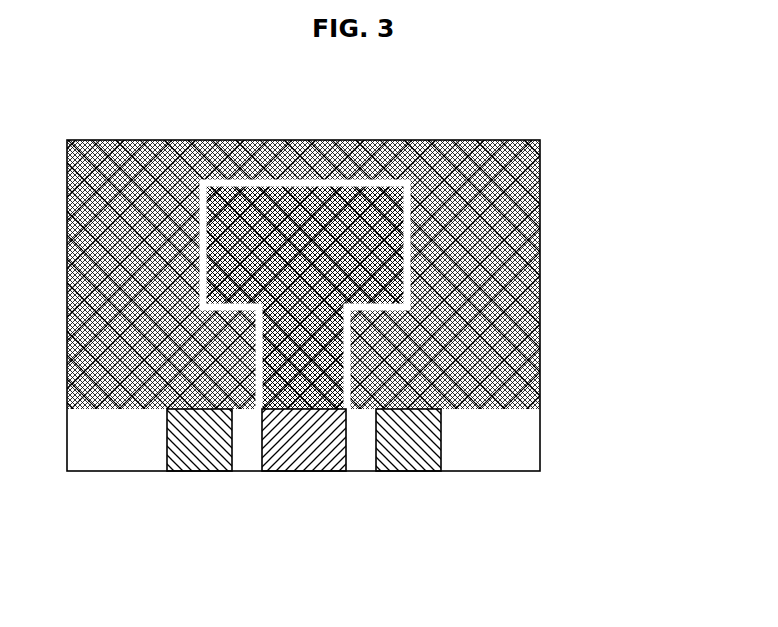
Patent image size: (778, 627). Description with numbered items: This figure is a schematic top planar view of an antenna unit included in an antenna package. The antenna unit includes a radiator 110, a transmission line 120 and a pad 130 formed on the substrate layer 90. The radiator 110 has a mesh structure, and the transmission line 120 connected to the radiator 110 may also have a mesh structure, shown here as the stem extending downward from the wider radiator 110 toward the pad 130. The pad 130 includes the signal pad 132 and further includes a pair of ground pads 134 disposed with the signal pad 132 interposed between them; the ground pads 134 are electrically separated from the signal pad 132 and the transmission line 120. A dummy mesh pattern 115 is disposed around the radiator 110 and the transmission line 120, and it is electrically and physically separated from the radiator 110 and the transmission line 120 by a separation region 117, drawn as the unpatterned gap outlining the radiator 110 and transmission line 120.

The substrate layer 90 is at (535, 443).
The radiator 110 is at (314, 200).
The dummy mesh pattern 115 is at (540, 233).
The separation region 117 is at (203, 171).
The transmission line 120 is at (265, 380).
The pad 130 is at (304, 498).
The signal pad 132 is at (304, 474).
The ground pad 134 is at (197, 462).